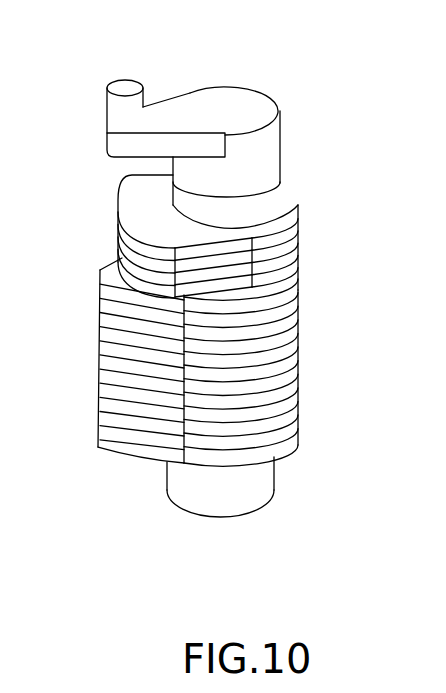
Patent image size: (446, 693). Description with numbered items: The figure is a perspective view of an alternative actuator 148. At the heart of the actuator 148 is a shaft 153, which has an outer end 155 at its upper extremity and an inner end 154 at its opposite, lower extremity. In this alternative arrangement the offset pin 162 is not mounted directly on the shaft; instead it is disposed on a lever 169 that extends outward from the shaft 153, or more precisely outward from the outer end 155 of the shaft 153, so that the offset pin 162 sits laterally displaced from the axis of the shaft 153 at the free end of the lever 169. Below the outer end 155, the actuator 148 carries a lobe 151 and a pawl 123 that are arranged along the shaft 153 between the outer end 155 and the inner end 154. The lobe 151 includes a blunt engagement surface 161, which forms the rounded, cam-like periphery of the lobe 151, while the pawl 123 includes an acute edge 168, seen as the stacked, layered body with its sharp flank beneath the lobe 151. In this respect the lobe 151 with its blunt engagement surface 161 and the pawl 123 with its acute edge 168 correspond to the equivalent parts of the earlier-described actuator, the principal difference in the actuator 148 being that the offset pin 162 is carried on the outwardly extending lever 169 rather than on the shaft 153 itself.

The alternative actuator 148 is at (318, 84).
The shaft 153 is at (289, 154).
The outer end 155 is at (283, 186).
The lever 169 is at (169, 99).
The offset pin 162 is at (123, 80).
The lobe 151 is at (110, 213).
The blunt engagement surface 161 is at (113, 253).
The acute edge 168 is at (98, 374).
The pawl 123 is at (129, 456).
The inner end 154 is at (282, 477).